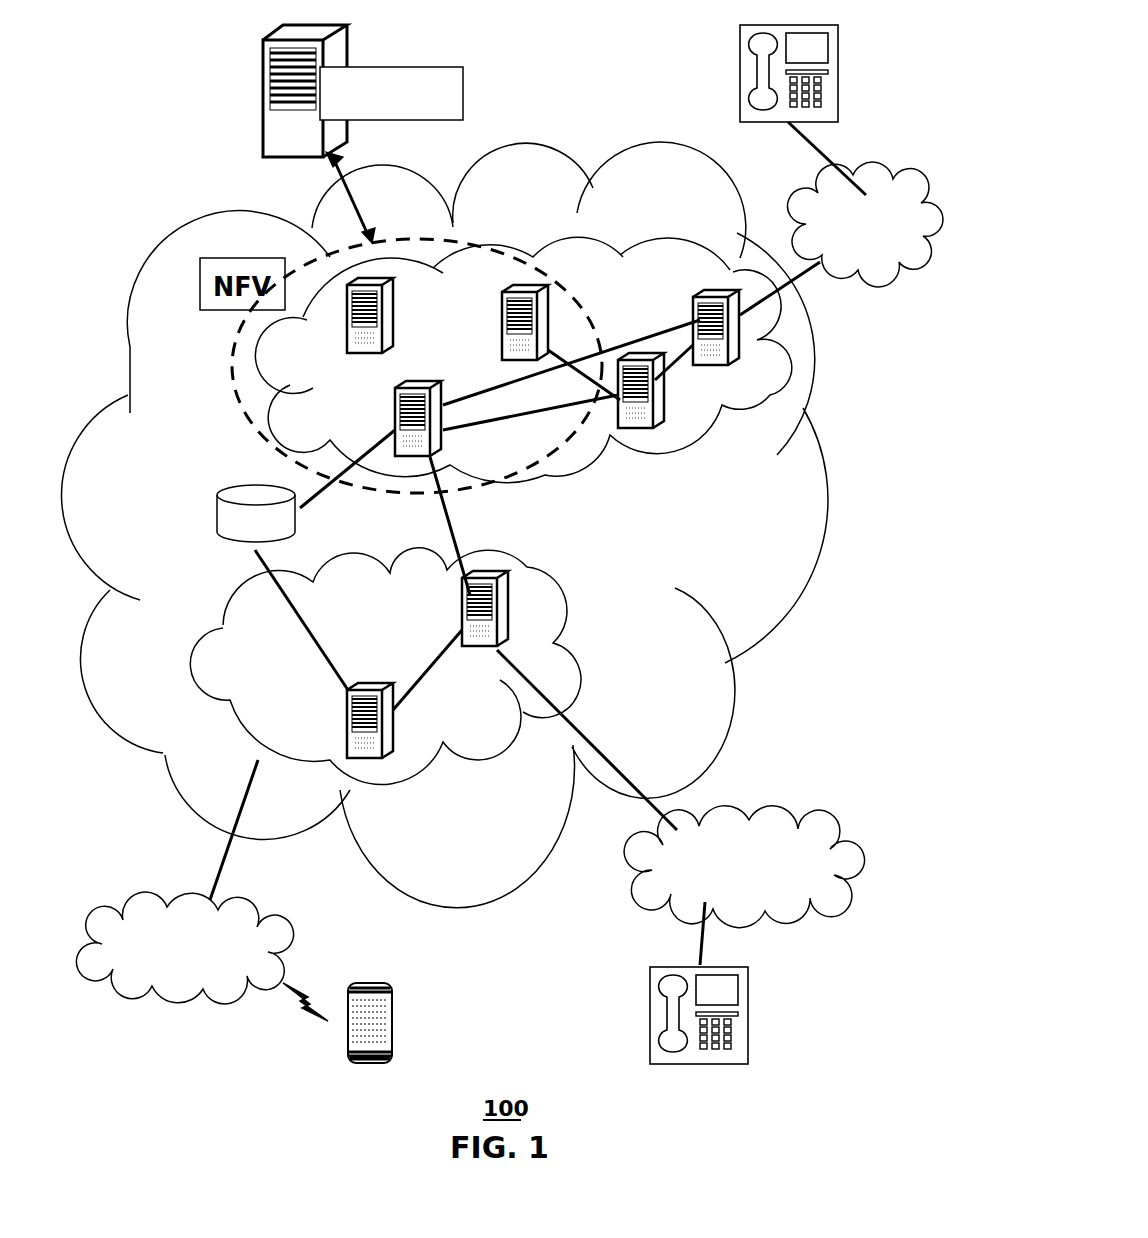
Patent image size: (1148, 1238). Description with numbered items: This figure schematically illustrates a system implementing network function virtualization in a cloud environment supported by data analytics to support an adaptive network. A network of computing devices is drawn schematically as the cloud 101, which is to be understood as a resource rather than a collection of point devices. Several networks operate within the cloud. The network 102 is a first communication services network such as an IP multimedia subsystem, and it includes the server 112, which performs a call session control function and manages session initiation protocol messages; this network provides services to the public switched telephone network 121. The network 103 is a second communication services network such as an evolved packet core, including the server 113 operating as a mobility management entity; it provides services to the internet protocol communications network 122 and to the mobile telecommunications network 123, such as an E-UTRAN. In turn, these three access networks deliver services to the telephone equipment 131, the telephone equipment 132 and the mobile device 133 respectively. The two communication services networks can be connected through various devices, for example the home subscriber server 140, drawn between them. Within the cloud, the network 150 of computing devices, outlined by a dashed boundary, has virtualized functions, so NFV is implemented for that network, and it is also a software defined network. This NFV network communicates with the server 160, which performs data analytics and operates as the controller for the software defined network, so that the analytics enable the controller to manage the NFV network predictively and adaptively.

The cloud 101 is at (576, 138).
The network 102 is at (695, 435).
The network 103 is at (573, 620).
The server 112 is at (435, 387).
The server 113 is at (380, 690).
The public switched telephone network 121 is at (868, 290).
The internet protocol communications network 122 is at (792, 815).
The mobile telecommunications network 123 is at (124, 915).
The telephone equipment 131 is at (840, 53).
The telephone equipment 132 is at (750, 995).
The mobile device 133 is at (392, 1005).
The home subscriber server 140 is at (215, 517).
The network 150 is at (235, 400).
The server 160 is at (262, 75).